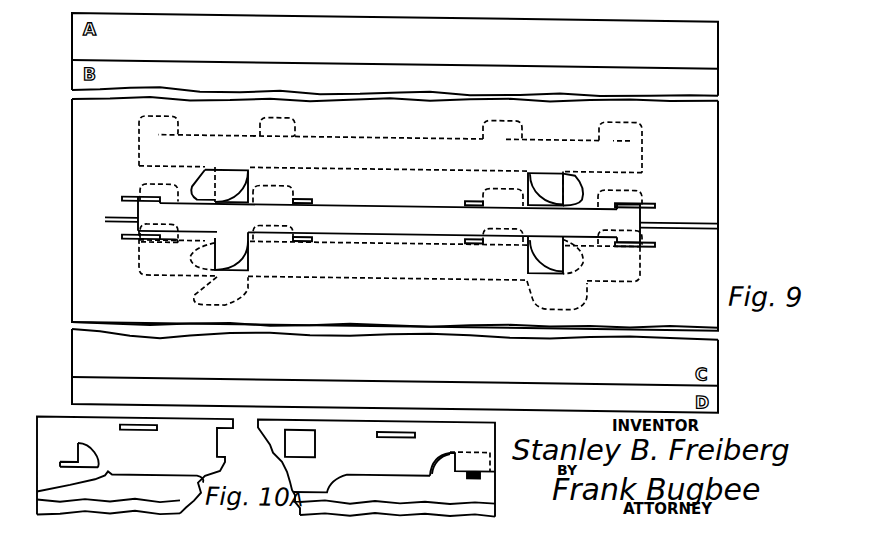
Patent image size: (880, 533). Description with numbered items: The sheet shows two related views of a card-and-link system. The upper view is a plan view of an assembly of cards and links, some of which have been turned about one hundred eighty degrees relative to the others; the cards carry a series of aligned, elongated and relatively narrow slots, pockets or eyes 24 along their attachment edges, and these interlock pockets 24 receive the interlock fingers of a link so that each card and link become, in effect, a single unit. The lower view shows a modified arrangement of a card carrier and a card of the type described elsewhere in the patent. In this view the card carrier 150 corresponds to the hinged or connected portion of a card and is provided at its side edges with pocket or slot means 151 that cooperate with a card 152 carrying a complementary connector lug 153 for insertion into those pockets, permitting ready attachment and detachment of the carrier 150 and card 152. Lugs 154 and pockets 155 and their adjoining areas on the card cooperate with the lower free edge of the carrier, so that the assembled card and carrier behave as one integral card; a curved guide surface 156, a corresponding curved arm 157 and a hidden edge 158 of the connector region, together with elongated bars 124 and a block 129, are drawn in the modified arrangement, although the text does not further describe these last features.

In FIG. 9, the interlock pockets 24 is at (655, 197).
In FIG. 10A, the guide bar 124 is at (157, 425).
In FIG. 10A, the block 129 is at (315, 440).
In FIG. 10A, the web strip 150 is at (60, 419).
In FIG. 10A, the latch arm 151 is at (76, 456).
In FIG. 10A, the lower ply 152 is at (490, 486).
In FIG. 10A, the stop block 153 is at (482, 469).
In FIG. 10A, the fold line 154 is at (179, 473).
In FIG. 10A, the base flange 155 is at (67, 467).
In FIG. 10A, the curved cam 156 is at (93, 450).
In FIG. 10A, the curved arm 157 is at (441, 449).
In FIG. 10A, the hidden edge 158 is at (490, 448).